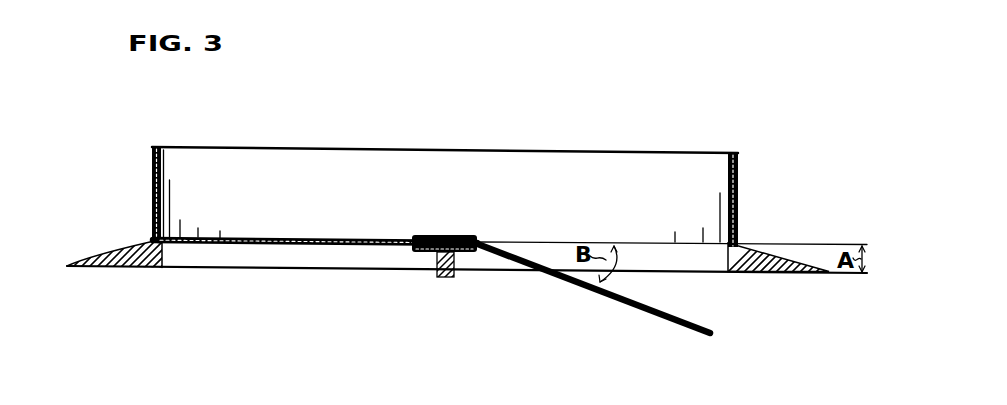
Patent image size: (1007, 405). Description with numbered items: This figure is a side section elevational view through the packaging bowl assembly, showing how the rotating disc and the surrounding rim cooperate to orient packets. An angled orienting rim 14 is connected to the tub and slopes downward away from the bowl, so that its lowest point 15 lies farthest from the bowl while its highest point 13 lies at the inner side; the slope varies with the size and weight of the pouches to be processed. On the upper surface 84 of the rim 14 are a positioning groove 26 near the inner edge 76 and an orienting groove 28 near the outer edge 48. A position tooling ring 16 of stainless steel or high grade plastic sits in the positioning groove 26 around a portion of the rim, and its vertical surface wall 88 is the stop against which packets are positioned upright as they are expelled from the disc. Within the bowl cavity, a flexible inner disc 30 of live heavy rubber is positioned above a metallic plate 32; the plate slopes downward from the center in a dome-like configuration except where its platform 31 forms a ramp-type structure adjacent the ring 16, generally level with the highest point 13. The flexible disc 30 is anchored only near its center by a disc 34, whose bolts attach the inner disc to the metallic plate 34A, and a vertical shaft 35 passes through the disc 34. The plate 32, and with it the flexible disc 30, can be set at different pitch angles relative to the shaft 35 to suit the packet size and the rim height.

The highest point 13 is at (167, 232).
The angled orienting rim 14 is at (113, 268).
The lowest point 15 is at (828, 271).
The position tooling ring 16 is at (152, 158).
The positioning groove 26 is at (152, 240).
The orienting groove 28 is at (97, 250).
The flexible inner disc 30 is at (258, 238).
The platform 31 is at (215, 247).
The metallic plate 32 is at (322, 246).
The disc 34 is at (464, 236).
The metallic plate 34A is at (426, 251).
The vertical shaft 35 is at (452, 276).
The outer edge 48 is at (67, 266).
The inner edge 76 is at (170, 257).
The upper surface 84 is at (130, 240).
The surface wall 88 is at (164, 163).